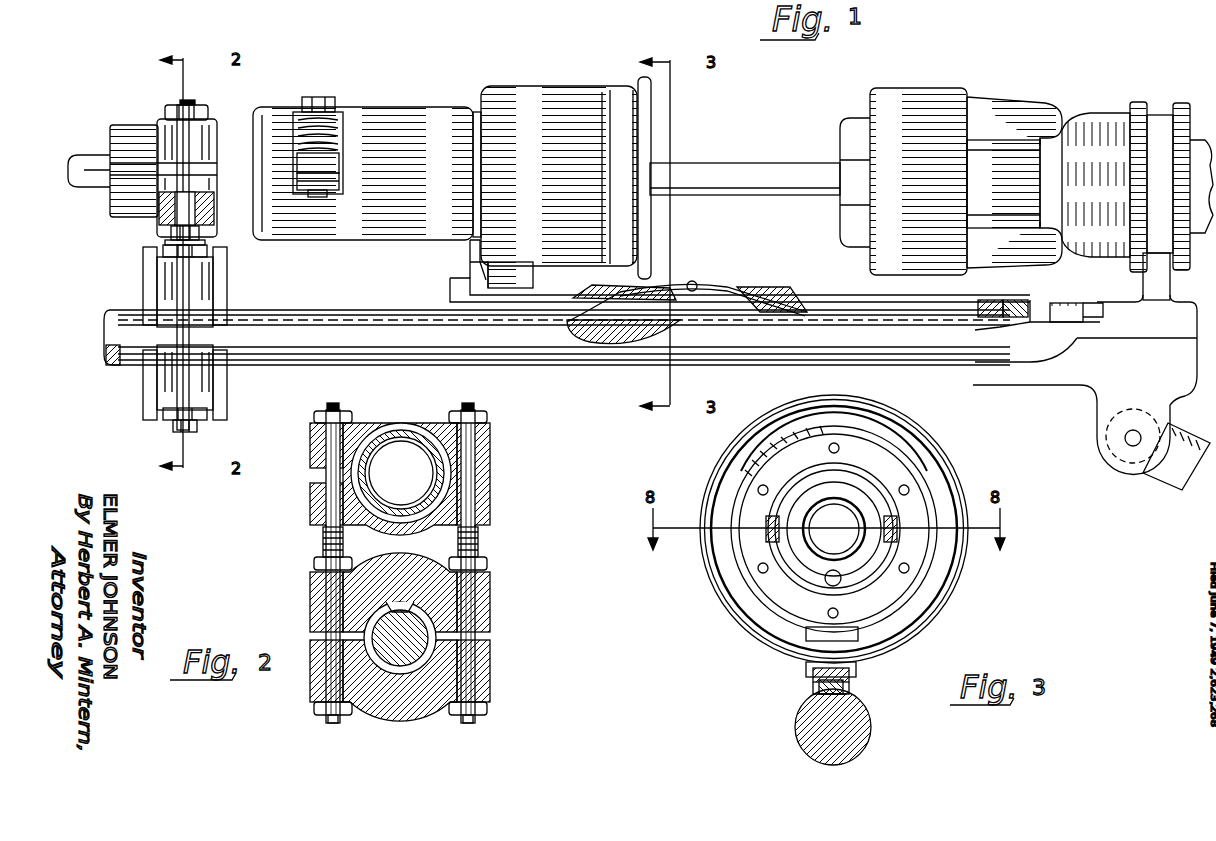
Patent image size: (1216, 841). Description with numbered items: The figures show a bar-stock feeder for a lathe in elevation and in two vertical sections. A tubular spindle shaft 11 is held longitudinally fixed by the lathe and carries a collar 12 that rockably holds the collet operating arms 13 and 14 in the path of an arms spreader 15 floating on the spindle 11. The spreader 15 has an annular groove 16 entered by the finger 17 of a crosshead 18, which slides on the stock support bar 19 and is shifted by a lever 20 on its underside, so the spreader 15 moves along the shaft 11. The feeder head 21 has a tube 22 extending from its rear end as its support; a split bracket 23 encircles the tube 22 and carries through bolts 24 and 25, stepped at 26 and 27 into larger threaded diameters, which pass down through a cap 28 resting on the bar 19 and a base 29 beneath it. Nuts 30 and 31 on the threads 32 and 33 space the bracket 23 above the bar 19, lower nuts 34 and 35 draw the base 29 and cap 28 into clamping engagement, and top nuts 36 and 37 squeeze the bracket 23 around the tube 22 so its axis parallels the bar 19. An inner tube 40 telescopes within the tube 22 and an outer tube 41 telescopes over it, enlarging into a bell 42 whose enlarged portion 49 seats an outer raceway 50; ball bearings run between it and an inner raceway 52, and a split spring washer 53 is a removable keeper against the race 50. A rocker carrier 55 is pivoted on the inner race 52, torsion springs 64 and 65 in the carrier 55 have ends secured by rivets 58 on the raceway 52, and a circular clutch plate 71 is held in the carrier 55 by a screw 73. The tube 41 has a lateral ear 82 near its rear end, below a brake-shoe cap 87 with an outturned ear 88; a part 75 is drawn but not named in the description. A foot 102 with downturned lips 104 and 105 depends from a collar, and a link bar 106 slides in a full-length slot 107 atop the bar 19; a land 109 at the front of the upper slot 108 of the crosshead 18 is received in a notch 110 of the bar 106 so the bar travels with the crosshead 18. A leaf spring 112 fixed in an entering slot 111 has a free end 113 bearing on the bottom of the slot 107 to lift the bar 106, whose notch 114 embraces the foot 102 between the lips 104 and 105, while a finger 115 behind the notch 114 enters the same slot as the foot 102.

In FIG. 1, the tubular spindle shaft 11 is at (1013, 178).
In FIG. 1, the collar 12 is at (912, 135).
In FIG. 1, the operating arm 13 is at (990, 112).
In FIG. 1, the operating arm 14 is at (997, 258).
In FIG. 1, the arms spreader 15 is at (1082, 155).
In FIG. 1, the annular groove 16 is at (1155, 145).
In FIG. 1, the finger 17 is at (1160, 268).
In FIG. 1, the crosshead 18 is at (1115, 365).
In FIG. 1, the stock support bar 19 is at (130, 336).
In FIG. 2, the stock support bar 19 is at (378, 630).
In FIG. 3, the stock support bar 19 is at (795, 728).
In FIG. 1, the lever 20 is at (1172, 470).
In FIG. 1, the feeder head 21 is at (405, 123).
In FIG. 1, the tube 22 is at (133, 142).
In FIG. 2, the tube 22 is at (440, 502).
In FIG. 1, the split bracket 23 is at (203, 140).
In FIG. 2, the split bracket 23 is at (490, 450).
In FIG. 1, the through bolt 24 is at (210, 225).
In FIG. 2, the through bolt 24 is at (333, 450).
In FIG. 2, the through bolt 25 is at (468, 440).
In FIG. 1, the step 26 is at (165, 234).
In FIG. 2, the step 26 is at (325, 526).
In FIG. 2, the step 27 is at (478, 527).
In FIG. 1, the cap 28 is at (200, 289).
In FIG. 2, the cap 28 is at (490, 597).
In FIG. 1, the base 29 is at (200, 375).
In FIG. 2, the base 29 is at (490, 661).
In FIG. 1, the nut 30 is at (165, 254).
In FIG. 2, the nut 30 is at (314, 563).
In FIG. 2, the nut 31 is at (487, 563).
In FIG. 2, the threads 32 is at (343, 544).
In FIG. 2, the threads 33 is at (458, 544).
In FIG. 1, the lower nut 34 is at (205, 418).
In FIG. 2, the lower nut 34 is at (314, 708).
In FIG. 2, the lower nut 35 is at (457, 716).
In FIG. 1, the top nut 36 is at (175, 112).
In FIG. 2, the top nut 36 is at (314, 418).
In FIG. 2, the top nut 37 is at (488, 410).
In FIG. 2, the inner tube 40 is at (401, 473).
In FIG. 1, the outer tube 41 is at (288, 218).
In FIG. 1, the bell 42 is at (520, 103).
In FIG. 3, the bell 42 is at (878, 497).
In FIG. 1, the enlarged portion 49 is at (630, 93).
In FIG. 3, the outer raceway 50 is at (782, 595).
In FIG. 3, the inner raceway 52 is at (775, 583).
In FIG. 3, the split spring washer 53 is at (790, 430).
In FIG. 3, the rocker carrier 55 is at (797, 590).
In FIG. 3, the rivets 58 is at (760, 490).
In FIG. 3, the torsion spring 64 is at (895, 540).
In FIG. 3, the torsion spring 65 is at (768, 542).
In FIG. 3, the circular clutch plate 71 is at (868, 508).
In FIG. 3, the screw 73 is at (842, 582).
In FIG. 1, the shaft 75 is at (92, 158).
In FIG. 1, the ear 82 is at (340, 179).
In FIG. 1, the cap 87 is at (338, 126).
In FIG. 1, the outturned ear 88 is at (340, 161).
In FIG. 1, the foot 102 is at (525, 271).
In FIG. 3, the foot 102 is at (858, 668).
In FIG. 3, the lip 104 is at (813, 676).
In FIG. 3, the lip 105 is at (846, 682).
In FIG. 1, the link bar 106 is at (450, 293).
In FIG. 3, the link bar 106 is at (816, 688).
In FIG. 1, the slot 107 is at (1085, 318).
In FIG. 1, the upper slot 108 is at (1073, 308).
In FIG. 1, the land 109 is at (998, 301).
In FIG. 1, the notch 110 is at (1022, 301).
In FIG. 1, the entering slot 111 is at (762, 298).
In FIG. 1, the leaf spring 112 is at (722, 290).
In FIG. 3, the leaf spring 112 is at (847, 692).
In FIG. 1, the free end 113 is at (630, 335).
In FIG. 1, the notch 114 is at (484, 276).
In FIG. 1, the finger 115 is at (470, 260).